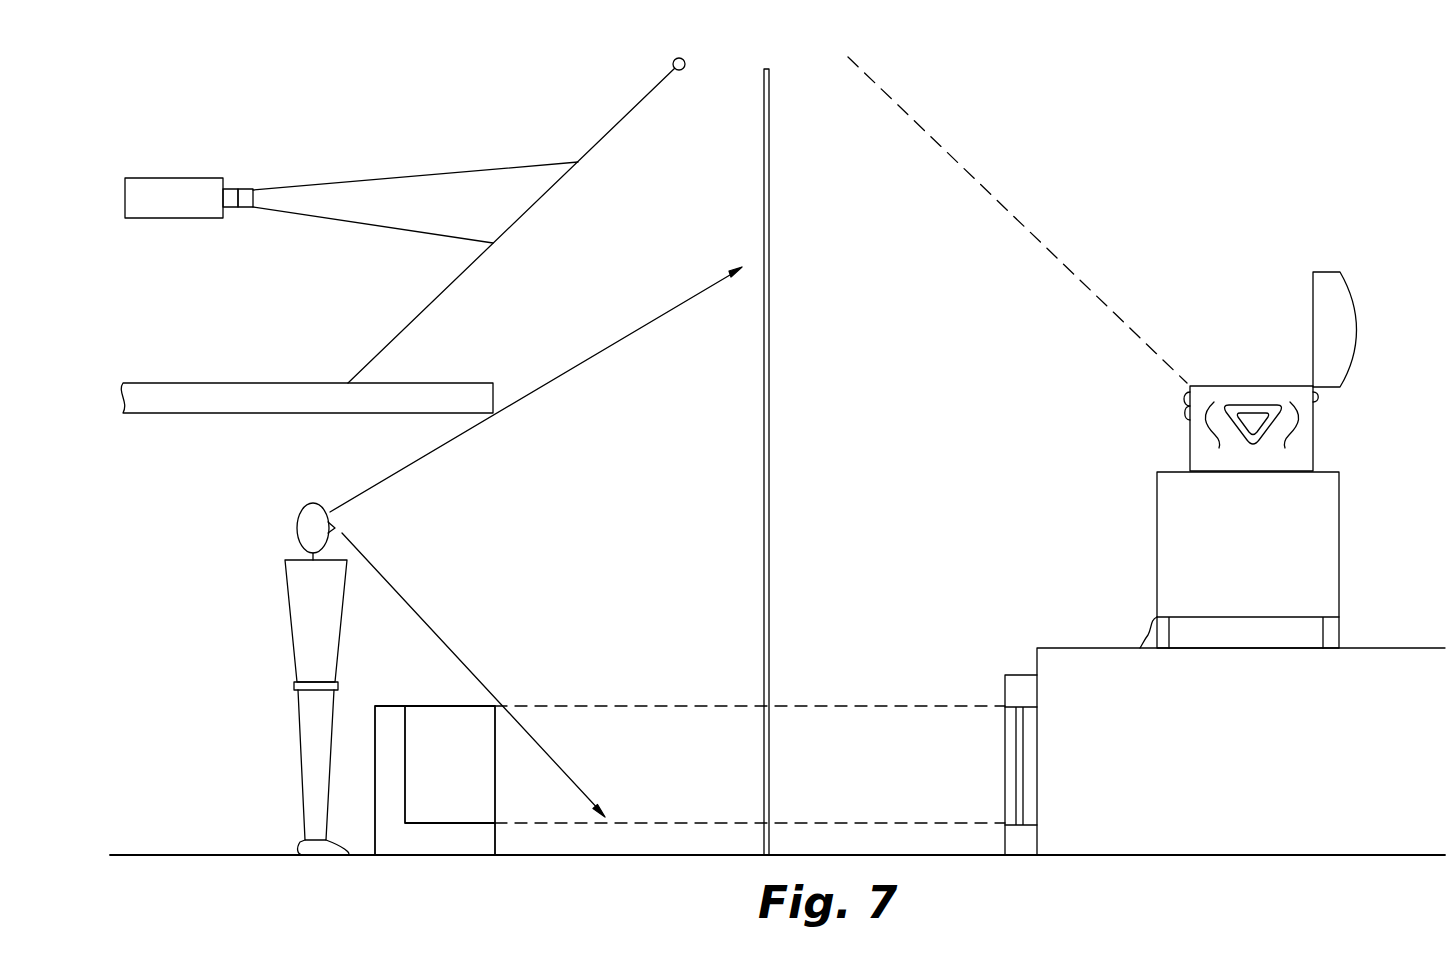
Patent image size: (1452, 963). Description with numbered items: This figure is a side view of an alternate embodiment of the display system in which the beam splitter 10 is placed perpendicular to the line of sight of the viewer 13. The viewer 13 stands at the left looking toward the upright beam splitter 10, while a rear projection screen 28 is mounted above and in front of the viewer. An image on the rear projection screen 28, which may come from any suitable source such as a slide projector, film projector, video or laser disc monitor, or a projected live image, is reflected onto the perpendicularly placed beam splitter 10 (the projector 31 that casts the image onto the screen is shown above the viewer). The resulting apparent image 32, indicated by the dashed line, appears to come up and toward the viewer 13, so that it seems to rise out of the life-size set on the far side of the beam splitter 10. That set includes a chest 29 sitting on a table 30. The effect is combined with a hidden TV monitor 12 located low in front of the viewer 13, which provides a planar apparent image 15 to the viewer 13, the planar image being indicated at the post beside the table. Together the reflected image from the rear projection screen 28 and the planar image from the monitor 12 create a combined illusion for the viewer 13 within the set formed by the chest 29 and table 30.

The beam splitter 10 is at (768, 193).
The hidden TV monitor 12 is at (470, 815).
The viewer 13 is at (285, 581).
The planar apparent image 15 is at (1037, 740).
The rear projection screen 28 is at (636, 108).
The chest 29 is at (1302, 438).
The table 30 is at (1327, 538).
The projector 31 is at (218, 178).
The apparent image 32 is at (963, 165).